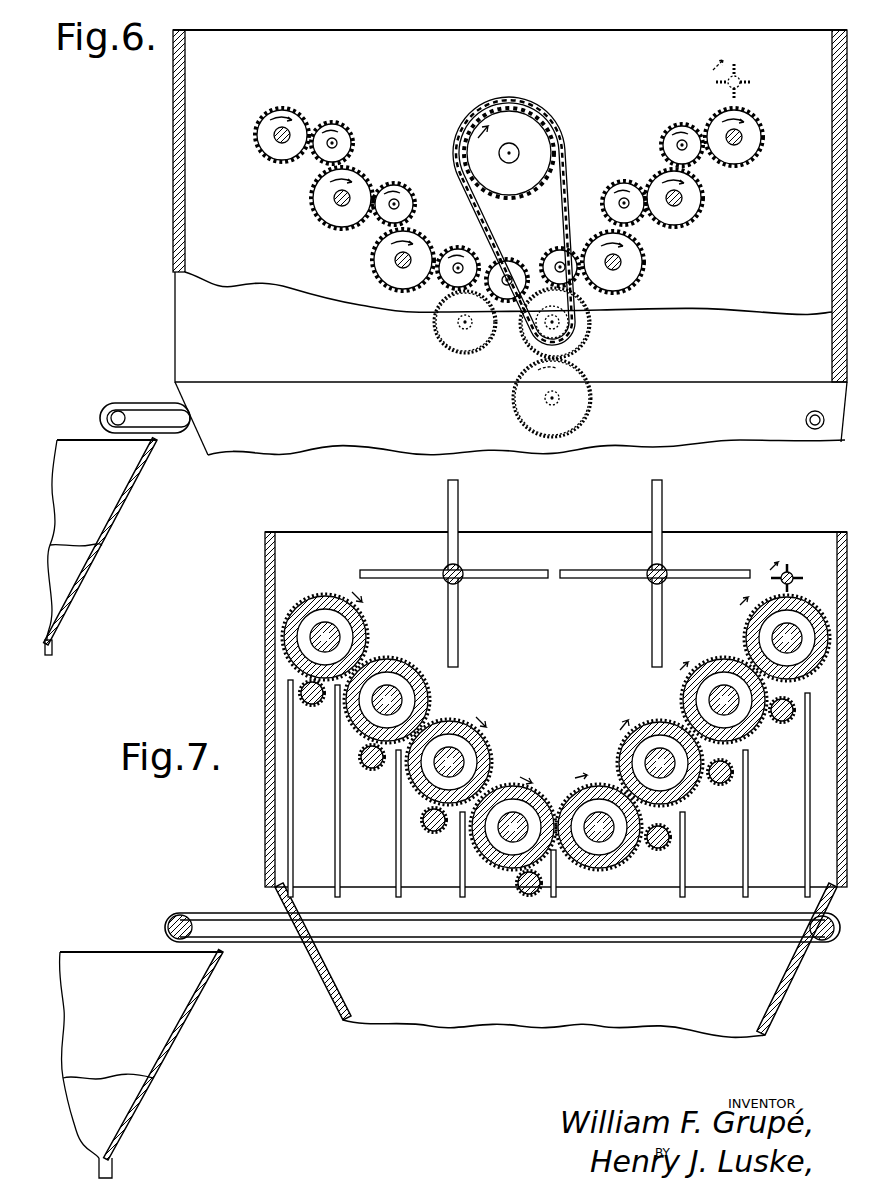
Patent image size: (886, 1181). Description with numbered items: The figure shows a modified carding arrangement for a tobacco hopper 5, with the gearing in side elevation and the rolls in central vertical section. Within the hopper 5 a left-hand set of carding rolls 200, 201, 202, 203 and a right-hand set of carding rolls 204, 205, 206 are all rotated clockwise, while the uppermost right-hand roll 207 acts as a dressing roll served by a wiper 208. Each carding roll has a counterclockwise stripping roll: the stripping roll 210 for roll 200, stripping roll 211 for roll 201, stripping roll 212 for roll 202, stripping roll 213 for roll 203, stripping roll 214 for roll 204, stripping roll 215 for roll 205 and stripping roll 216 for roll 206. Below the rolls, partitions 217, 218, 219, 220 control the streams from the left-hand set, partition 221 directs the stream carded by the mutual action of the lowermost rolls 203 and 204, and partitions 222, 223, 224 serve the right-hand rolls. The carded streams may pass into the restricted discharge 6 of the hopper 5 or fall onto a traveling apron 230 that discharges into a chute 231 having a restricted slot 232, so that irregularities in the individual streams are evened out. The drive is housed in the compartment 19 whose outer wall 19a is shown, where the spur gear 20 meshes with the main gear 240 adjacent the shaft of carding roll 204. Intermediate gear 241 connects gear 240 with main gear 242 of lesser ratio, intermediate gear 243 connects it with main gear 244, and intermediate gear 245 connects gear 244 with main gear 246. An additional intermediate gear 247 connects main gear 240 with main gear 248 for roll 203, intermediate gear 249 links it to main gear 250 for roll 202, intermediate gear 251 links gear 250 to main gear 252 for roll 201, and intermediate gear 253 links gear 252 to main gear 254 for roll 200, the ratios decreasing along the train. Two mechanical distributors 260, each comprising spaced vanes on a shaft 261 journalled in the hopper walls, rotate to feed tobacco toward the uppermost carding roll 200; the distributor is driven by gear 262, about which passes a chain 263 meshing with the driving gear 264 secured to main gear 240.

In FIG. 7, the hopper 5 is at (601, 532).
In FIG. 7, the restricted discharge 6 is at (336, 1000).
In FIG. 6, the compartment 19 is at (345, 44).
In FIG. 6, the outer wall 19a is at (508, 310).
In FIG. 6, the spur gear 20 is at (584, 405).
In FIG. 7, the carding roll 200 is at (360, 620).
In FIG. 7, the carding roll 201 is at (426, 690).
In FIG. 7, the carding roll 202 is at (476, 752).
In FIG. 7, the carding roll 203 is at (512, 785).
In FIG. 7, the carding roll 204 is at (597, 785).
In FIG. 7, the carding roll 205 is at (645, 735).
In FIG. 7, the carding roll 206 is at (712, 660).
In FIG. 7, the dressing roll 207 is at (757, 608).
In FIG. 6, the wiper 208 is at (748, 80).
In FIG. 7, the wiper 208 is at (790, 572).
In FIG. 7, the stripping roll 210 is at (300, 693).
In FIG. 7, the stripping roll 211 is at (360, 757).
In FIG. 7, the stripping roll 212 is at (424, 830).
In FIG. 7, the stripping roll 213 is at (541, 895).
In FIG. 7, the stripping roll 214 is at (658, 850).
In FIG. 7, the stripping roll 215 is at (734, 772).
In FIG. 7, the stripping roll 216 is at (796, 712).
In FIG. 7, the partition 217 is at (288, 797).
In FIG. 7, the partition 218 is at (337, 897).
In FIG. 7, the partition 219 is at (398, 897).
In FIG. 7, the partition 220 is at (462, 897).
In FIG. 7, the partition 221 is at (553, 897).
In FIG. 7, the partition 222 is at (682, 897).
In FIG. 7, the partition 223 is at (745, 897).
In FIG. 7, the partition 224 is at (810, 776).
In FIG. 6, the apron 230 is at (135, 403).
In FIG. 7, the apron 230 is at (228, 913).
In FIG. 6, the chute 231 is at (106, 492).
In FIG. 7, the chute 231 is at (165, 1022).
In FIG. 6, the restricted slot 232 is at (53, 647).
In FIG. 7, the restricted slot 232 is at (112, 1165).
In FIG. 6, the main gear 240 is at (586, 345).
In FIG. 6, the intermediate gear 241 is at (557, 258).
In FIG. 6, the main gear 242 is at (641, 268).
In FIG. 6, the intermediate gear 243 is at (620, 188).
In FIG. 6, the main gear 244 is at (694, 202).
In FIG. 6, the intermediate gear 245 is at (669, 127).
In FIG. 6, the main gear 246 is at (752, 142).
In FIG. 6, the intermediate gear 247 is at (511, 268).
In FIG. 6, the main gear 248 is at (447, 304).
In FIG. 6, the intermediate gear 249 is at (456, 258).
In FIG. 6, the main gear 250 is at (381, 265).
In FIG. 6, the intermediate gear 251 is at (397, 195).
In FIG. 6, the main gear 252 is at (322, 212).
In FIG. 6, the intermediate gear 253 is at (341, 139).
In FIG. 6, the main gear 254 is at (277, 148).
In FIG. 7, the mechanical distributor 260 is at (460, 552).
In FIG. 7, the shaft 261 is at (462, 580).
In FIG. 6, the gear 262 is at (538, 128).
In FIG. 6, the chain 263 is at (567, 192).
In FIG. 6, the driving gear 264 is at (552, 312).